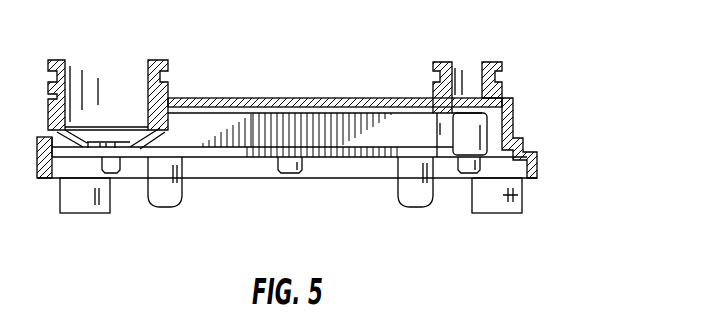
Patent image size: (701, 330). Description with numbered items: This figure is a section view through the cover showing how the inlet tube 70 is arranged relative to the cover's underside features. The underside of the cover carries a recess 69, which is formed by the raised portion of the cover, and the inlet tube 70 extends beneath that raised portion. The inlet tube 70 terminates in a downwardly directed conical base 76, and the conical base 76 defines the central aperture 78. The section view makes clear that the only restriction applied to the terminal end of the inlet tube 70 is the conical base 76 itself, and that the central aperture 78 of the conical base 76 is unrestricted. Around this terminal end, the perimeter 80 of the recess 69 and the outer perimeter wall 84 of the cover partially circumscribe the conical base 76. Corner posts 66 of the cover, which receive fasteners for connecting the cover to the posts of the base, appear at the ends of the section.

The corner posts 66 is at (67, 196).
The recess 69 is at (338, 178).
The inlet tube 70 is at (132, 68).
The conical base 76 is at (150, 133).
The central aperture 78 is at (115, 140).
The perimeter of the recess 80 is at (514, 128).
The outer perimeter wall 84 is at (538, 163).